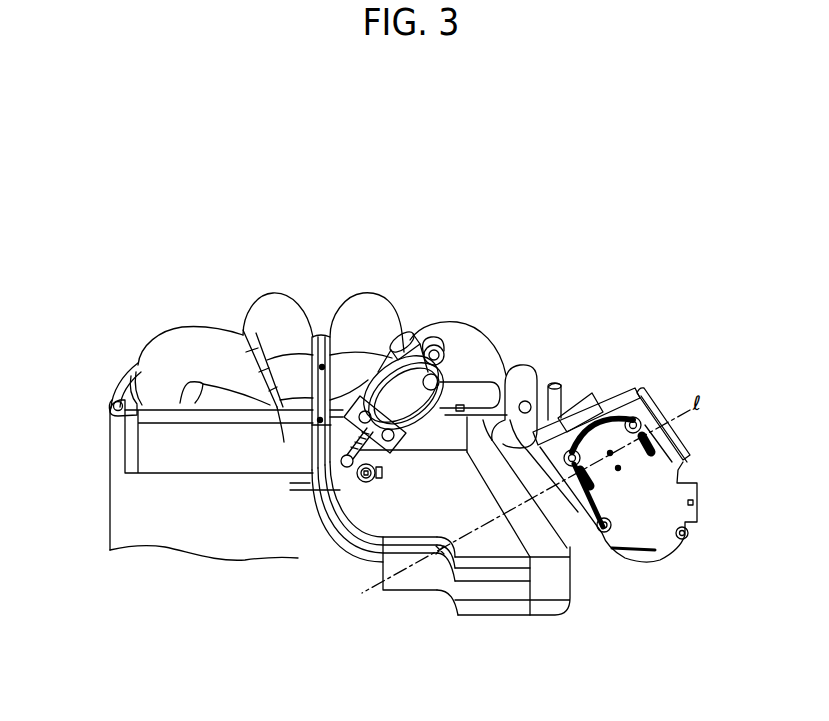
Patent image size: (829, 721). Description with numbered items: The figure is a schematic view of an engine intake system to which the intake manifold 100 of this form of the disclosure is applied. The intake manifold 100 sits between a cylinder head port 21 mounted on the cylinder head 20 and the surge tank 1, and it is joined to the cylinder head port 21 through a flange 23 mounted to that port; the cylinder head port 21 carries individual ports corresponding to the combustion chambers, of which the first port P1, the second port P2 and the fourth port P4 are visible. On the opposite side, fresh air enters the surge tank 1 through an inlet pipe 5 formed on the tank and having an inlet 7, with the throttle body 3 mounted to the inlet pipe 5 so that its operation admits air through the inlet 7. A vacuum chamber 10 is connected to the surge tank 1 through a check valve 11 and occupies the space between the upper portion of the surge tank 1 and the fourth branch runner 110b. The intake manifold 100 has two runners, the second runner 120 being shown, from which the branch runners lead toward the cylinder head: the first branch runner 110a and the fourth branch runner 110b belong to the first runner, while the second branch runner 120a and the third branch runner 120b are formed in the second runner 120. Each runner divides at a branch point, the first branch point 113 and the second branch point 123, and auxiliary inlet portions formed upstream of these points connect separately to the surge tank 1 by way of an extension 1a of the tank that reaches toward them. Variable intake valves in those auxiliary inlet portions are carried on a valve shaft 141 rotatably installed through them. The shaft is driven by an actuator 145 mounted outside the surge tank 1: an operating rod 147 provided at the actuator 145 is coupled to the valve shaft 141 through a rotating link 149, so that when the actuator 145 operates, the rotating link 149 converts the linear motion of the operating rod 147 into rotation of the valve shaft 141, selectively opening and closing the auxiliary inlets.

The intake manifold 100 is at (296, 243).
The surge tank 1 is at (499, 607).
The extension 1a is at (392, 512).
The throttle body 3 is at (646, 545).
The inlet pipe 5 is at (622, 407).
The inlet 7 is at (647, 390).
The vacuum chamber 10 is at (510, 357).
The check valve 11 is at (462, 405).
The cylinder head 20 is at (133, 516).
The cylinder head port 21 is at (143, 455).
The flange 23 is at (123, 388).
The first branch runner 110a is at (160, 343).
The fourth branch runner 110b is at (467, 340).
The first branch point 113 is at (322, 366).
The second runner 120 is at (415, 591).
The second branch runner 120a is at (262, 308).
The third branch runner 120b is at (370, 304).
The second branch point 123 is at (381, 346).
The valve shaft 141 is at (363, 482).
The actuator 145 is at (440, 334).
The operating rod 147 is at (352, 430).
The rotating link 149 is at (284, 442).
The first port P1 is at (112, 402).
The second port P2 is at (243, 420).
The fourth port P4 is at (522, 373).